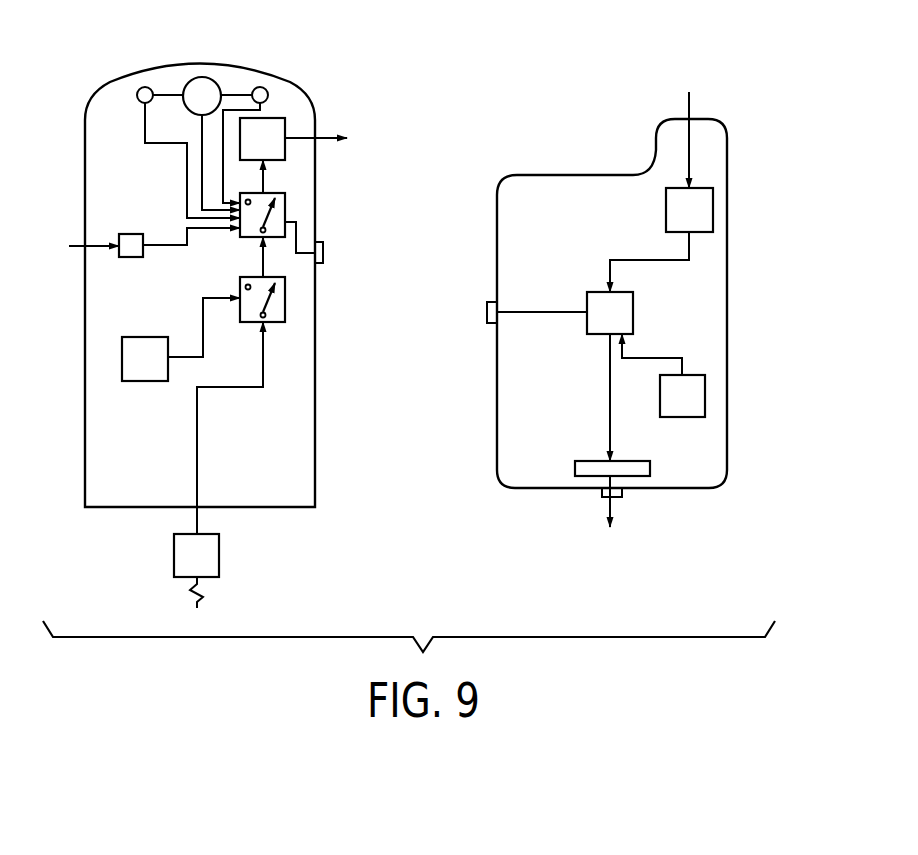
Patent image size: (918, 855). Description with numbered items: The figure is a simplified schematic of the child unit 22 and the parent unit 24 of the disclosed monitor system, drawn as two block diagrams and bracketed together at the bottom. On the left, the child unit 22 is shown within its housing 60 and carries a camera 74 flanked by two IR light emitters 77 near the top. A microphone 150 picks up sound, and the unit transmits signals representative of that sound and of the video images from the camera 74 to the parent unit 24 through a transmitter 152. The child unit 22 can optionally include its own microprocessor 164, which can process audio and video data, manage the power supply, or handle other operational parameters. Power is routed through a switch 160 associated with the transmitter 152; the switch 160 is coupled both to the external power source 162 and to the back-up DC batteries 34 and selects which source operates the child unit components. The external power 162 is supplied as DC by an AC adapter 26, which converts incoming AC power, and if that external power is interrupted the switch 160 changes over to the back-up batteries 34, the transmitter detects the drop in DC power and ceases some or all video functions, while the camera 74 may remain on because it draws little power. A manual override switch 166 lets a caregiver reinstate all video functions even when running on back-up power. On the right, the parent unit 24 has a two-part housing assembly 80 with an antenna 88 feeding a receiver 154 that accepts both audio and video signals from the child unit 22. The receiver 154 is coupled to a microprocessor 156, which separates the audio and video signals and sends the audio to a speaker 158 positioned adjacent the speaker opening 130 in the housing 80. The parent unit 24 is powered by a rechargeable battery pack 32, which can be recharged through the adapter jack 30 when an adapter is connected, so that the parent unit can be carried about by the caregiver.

The child unit 22 is at (73, 232).
The parent unit 24 is at (483, 243).
The AC adapter 26 is at (222, 555).
The adapter jack 30 is at (486, 310).
The rechargeable battery pack 32 is at (706, 397).
The DC batteries 34 is at (135, 363).
The housing 60 is at (316, 455).
The camera 74 is at (200, 72).
The IR light emitters 77 is at (143, 74).
The housing assembly 80 is at (497, 392).
The antenna 88 is at (710, 130).
The speaker opening 130 is at (624, 492).
The microphone 150 is at (133, 257).
The transmitter 152 is at (276, 124).
The receiver 154 is at (714, 208).
The microprocessor 156 is at (636, 312).
The speaker 158 is at (590, 470).
The switch 160 is at (286, 297).
The external power source 162 is at (197, 455).
The microprocessor 164 is at (286, 202).
The switch 166 is at (324, 252).